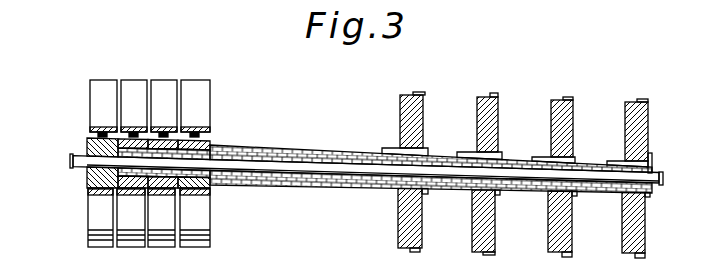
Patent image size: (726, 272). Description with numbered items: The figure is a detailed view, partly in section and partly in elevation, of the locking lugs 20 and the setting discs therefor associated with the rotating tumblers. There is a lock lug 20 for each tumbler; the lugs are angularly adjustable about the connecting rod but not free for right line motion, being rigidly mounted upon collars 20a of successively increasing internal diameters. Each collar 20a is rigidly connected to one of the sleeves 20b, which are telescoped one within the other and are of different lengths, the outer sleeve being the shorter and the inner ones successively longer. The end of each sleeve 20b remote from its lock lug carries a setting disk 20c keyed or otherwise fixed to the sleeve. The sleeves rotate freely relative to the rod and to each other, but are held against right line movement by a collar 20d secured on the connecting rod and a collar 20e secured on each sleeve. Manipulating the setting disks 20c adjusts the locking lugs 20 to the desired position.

The locking lug 20 is at (89, 136).
The collar 20a is at (88, 147).
The sleeve 20b is at (278, 147).
The setting disk 20c is at (574, 101).
The collar 20d is at (651, 160).
The collar 20e is at (574, 157).